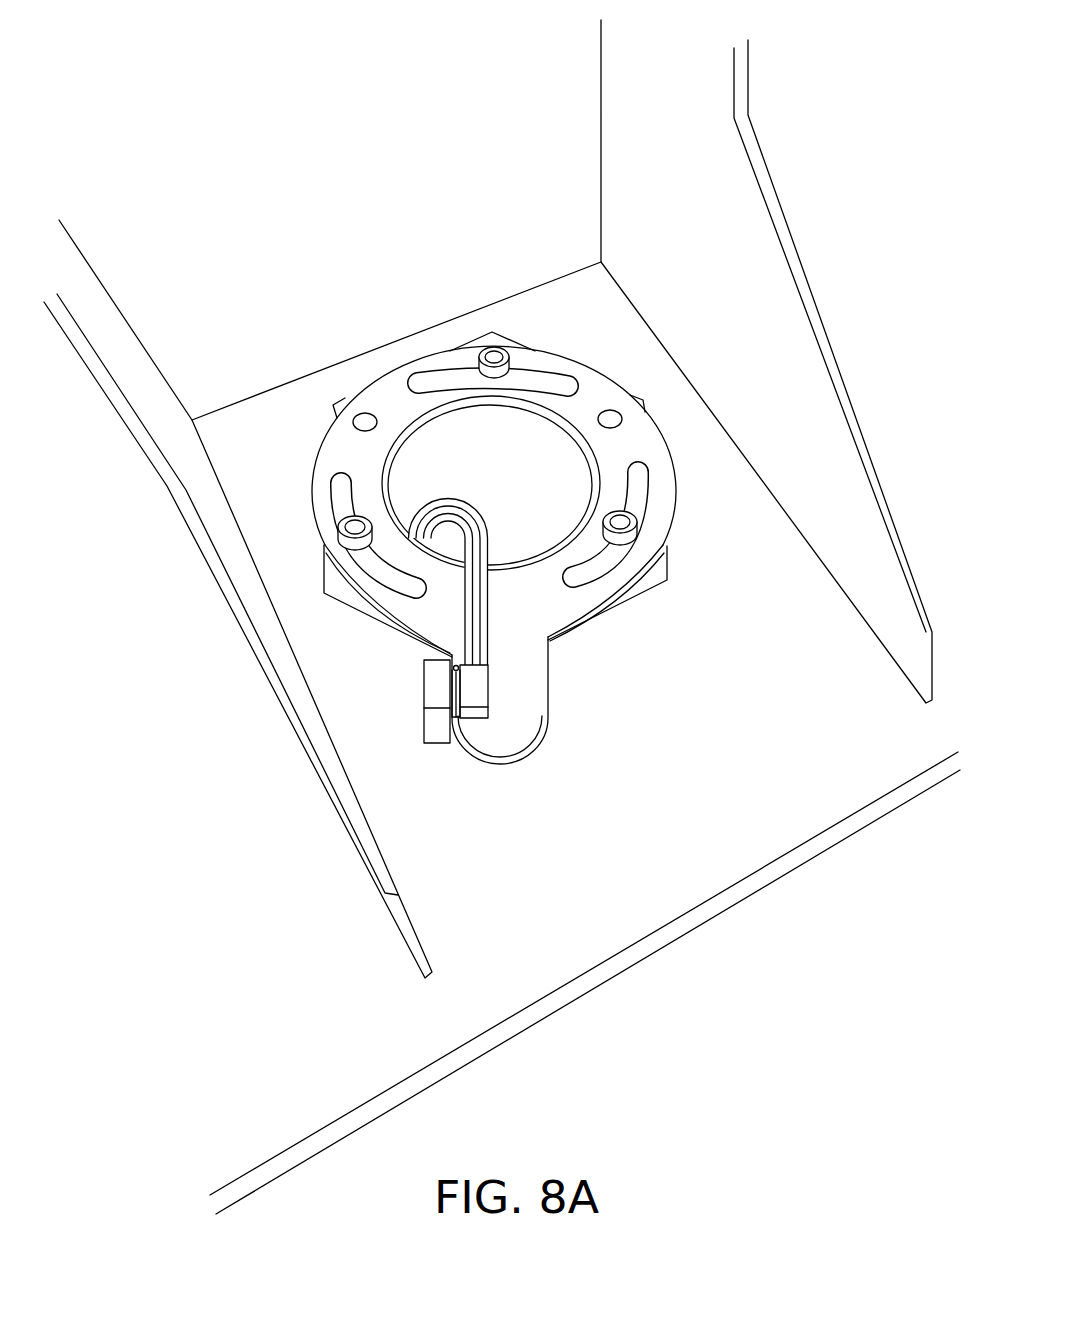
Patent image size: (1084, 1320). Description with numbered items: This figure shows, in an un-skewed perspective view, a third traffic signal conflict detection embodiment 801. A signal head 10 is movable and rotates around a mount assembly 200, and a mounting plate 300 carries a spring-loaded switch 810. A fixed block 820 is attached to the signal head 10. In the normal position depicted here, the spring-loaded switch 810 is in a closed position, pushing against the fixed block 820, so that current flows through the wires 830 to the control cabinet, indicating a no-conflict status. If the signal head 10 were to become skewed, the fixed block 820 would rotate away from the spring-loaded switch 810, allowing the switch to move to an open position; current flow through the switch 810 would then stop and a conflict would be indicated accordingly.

The signal head 10 is at (93, 317).
The mount assembly 200 is at (484, 280).
The mounting plate 300 is at (584, 400).
The third traffic signal conflict detection embodiment 801 is at (379, 94).
The spring-loaded switch 810 is at (476, 714).
The fixed block 820 is at (437, 728).
The wires 830 is at (471, 497).